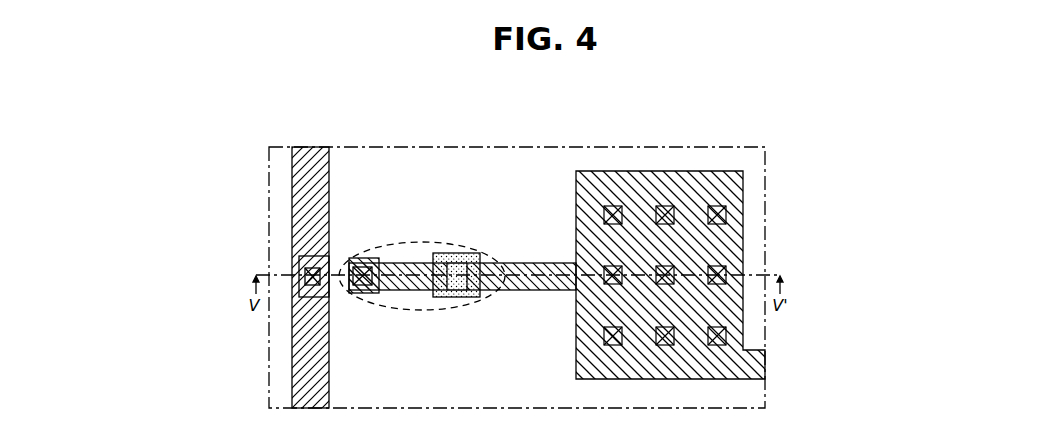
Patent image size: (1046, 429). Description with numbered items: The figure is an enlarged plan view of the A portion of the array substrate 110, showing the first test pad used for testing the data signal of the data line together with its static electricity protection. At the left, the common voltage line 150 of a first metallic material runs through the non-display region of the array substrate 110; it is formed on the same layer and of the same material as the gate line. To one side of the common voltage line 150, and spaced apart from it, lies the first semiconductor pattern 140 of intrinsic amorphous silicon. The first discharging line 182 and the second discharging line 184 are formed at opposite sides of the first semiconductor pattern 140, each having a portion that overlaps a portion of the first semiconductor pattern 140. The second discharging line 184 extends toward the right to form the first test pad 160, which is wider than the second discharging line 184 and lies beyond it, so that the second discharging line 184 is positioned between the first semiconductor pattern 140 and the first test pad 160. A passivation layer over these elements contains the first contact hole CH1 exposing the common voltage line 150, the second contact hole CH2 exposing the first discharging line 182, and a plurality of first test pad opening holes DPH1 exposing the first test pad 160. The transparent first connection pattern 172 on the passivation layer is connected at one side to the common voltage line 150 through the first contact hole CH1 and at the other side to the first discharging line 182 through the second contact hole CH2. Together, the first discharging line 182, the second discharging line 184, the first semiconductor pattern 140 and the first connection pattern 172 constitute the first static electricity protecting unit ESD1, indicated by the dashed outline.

The A portion A is at (453, 147).
The array substrate 110 is at (726, 404).
The first semiconductor pattern 140 is at (457, 255).
The common voltage line 150 is at (306, 195).
The first test pad 160 is at (640, 180).
The first connection pattern 172 is at (310, 298).
The first discharging line 182 is at (410, 265).
The second discharging line 184 is at (521, 263).
The first contact hole CH1 is at (316, 264).
The second contact hole CH2 is at (362, 264).
The first test pad opening holes DPH1 is at (722, 266).
The first static electricity protecting unit ESD1 is at (431, 309).